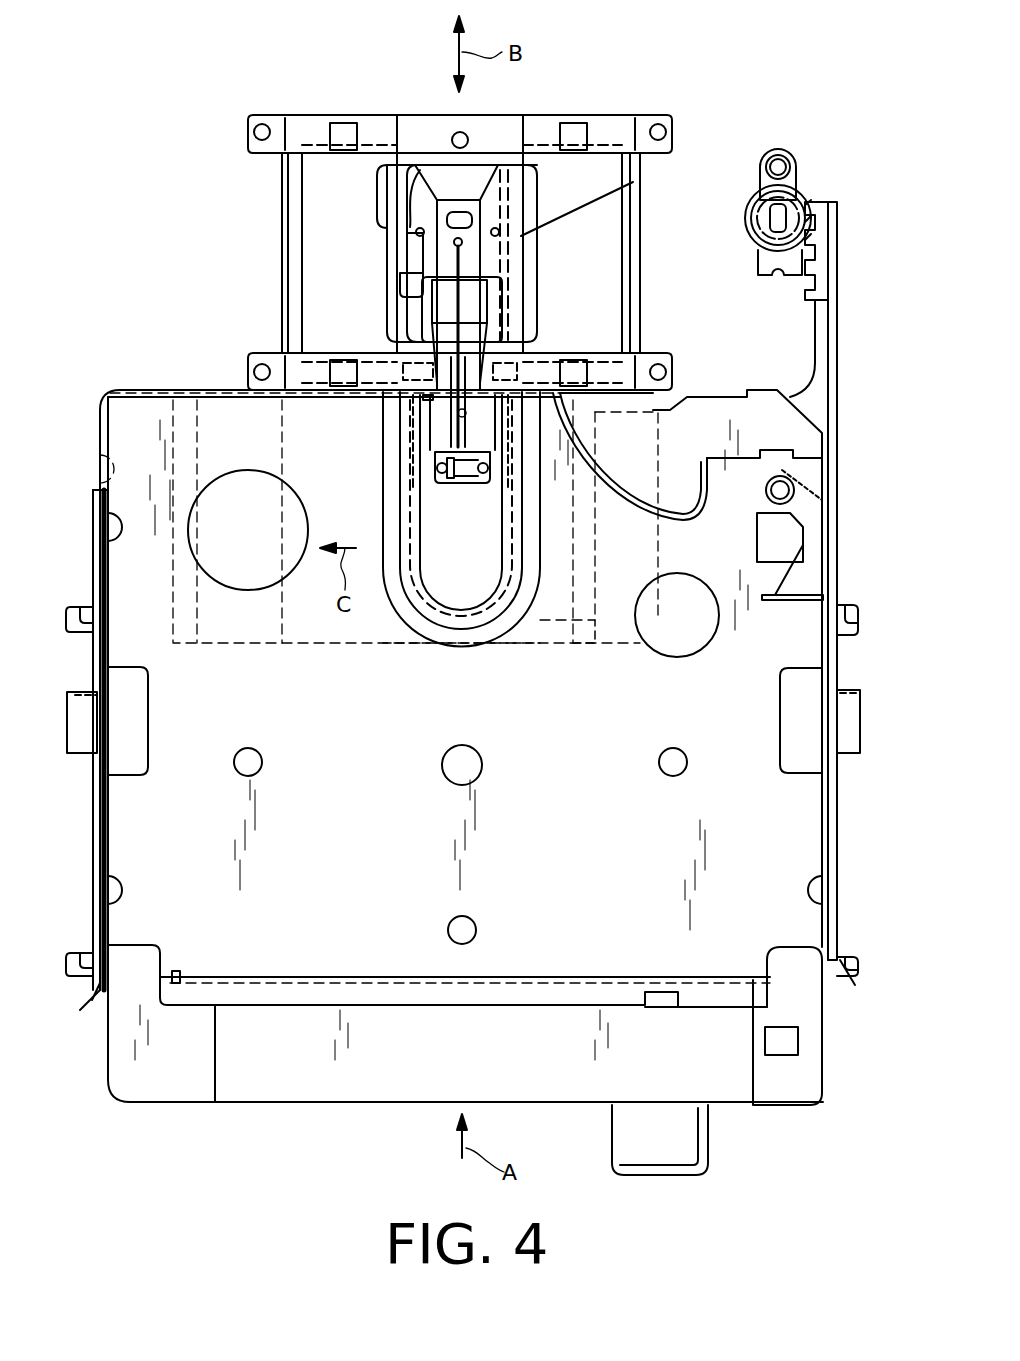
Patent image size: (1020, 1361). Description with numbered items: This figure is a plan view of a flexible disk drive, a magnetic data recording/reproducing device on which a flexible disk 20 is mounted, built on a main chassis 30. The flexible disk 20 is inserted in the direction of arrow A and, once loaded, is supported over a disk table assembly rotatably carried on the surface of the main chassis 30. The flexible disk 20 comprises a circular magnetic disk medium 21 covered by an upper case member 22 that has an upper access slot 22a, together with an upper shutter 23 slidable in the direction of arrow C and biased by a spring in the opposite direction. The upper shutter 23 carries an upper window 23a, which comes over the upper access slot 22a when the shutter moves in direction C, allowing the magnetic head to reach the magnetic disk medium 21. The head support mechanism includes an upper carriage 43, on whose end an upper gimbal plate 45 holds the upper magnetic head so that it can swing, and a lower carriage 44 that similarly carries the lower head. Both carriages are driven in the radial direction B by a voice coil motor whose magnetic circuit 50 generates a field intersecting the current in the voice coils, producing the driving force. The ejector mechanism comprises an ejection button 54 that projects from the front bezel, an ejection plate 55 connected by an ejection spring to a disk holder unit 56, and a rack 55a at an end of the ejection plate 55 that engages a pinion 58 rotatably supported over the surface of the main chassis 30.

The flexible disk 20 is at (367, 1075).
The magnetic disk medium 21 is at (477, 560).
The upper case member 22 is at (722, 410).
The upper access slot 22a is at (442, 600).
The upper shutter 23 is at (573, 625).
The upper window 23a is at (495, 633).
The main chassis 30 is at (96, 790).
The upper carriage 43 is at (415, 415).
The lower carriage 44 is at (420, 166).
The upper gimbal plate 45 is at (460, 487).
The magnetic circuit 50 is at (642, 233).
The ejection button 54 is at (712, 1132).
The ejection plate 55 is at (822, 345).
The rack 55a is at (823, 234).
The disk holder unit 56 is at (558, 1007).
The pinion 58 is at (741, 220).